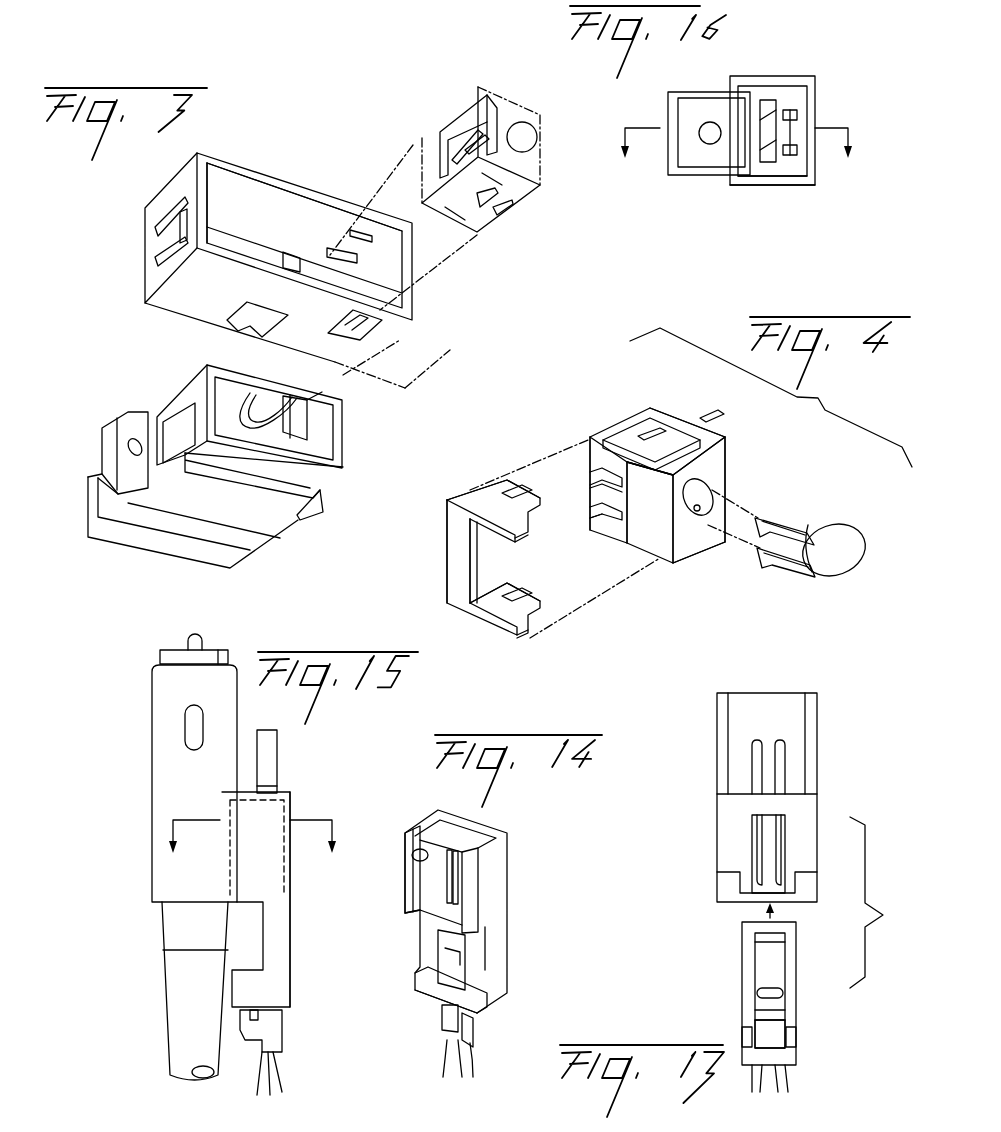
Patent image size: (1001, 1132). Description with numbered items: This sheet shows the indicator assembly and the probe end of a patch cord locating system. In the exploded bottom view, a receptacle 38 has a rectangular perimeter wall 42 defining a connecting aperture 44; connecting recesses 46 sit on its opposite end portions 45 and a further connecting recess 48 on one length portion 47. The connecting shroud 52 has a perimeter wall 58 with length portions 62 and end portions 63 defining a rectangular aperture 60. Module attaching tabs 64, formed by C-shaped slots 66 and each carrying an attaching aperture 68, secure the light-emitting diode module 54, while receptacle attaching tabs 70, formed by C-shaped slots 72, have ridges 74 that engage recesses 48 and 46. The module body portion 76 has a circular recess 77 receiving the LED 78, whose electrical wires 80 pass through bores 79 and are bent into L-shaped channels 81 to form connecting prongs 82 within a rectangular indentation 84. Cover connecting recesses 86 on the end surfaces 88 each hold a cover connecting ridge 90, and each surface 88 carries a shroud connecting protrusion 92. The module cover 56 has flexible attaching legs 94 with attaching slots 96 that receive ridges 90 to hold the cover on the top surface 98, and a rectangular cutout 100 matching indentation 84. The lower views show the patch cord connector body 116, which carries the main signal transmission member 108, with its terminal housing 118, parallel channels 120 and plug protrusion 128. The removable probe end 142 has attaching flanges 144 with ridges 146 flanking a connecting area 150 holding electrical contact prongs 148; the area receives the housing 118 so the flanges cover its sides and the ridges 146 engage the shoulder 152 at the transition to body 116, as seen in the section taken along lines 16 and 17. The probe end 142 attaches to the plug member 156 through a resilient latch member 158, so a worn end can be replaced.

In FIG. 15, the section line 16 is at (253, 847).
In FIG. 16, the section line 17 is at (737, 156).
In FIG. 3, the receptacle 38 is at (378, 405).
In FIG. 3, the perimeter wall 42 is at (345, 440).
In FIG. 3, the connecting aperture 44 is at (332, 408).
In FIG. 3, the end portions 45 is at (200, 382).
In FIG. 3, the connecting recesses 46 is at (143, 453).
In FIG. 3, the length portion 47 is at (322, 485).
In FIG. 3, the connecting recess 48 is at (248, 475).
In FIG. 3, the connecting shroud 52 is at (278, 148).
In FIG. 3, the light-emitting diode module 54 is at (513, 78).
In FIG. 4, the light-emitting diode module 54 is at (588, 418).
In FIG. 3, the module cover 56 is at (445, 85).
In FIG. 4, the module cover 56 is at (462, 480).
In FIG. 3, the perimeter wall 58 is at (231, 150).
In FIG. 3, the rectangular aperture 60 is at (215, 208).
In FIG. 3, the length portions 62 is at (300, 185).
In FIG. 3, the end portions 63 is at (180, 170).
In FIG. 3, the module attaching tabs 64 is at (358, 262).
In FIG. 3, the C-shaped slots 66 is at (366, 230).
In FIG. 3, the attaching aperture 68 is at (345, 318).
In FIG. 3, the receptacle attaching tab 70 is at (153, 225).
In FIG. 3, the C-shaped slots 72 is at (155, 258).
In FIG. 3, the ridge 74 is at (216, 230).
In FIG. 4, the body portion 76 is at (722, 457).
In FIG. 4, the circular recess 77 is at (712, 505).
In FIG. 3, the LED 78 is at (536, 124).
In FIG. 4, the LED 78 is at (850, 573).
In FIG. 4, the bores 79 is at (690, 508).
In FIG. 4, the electrical wires 80 is at (795, 535).
In FIG. 4, the L-shaped channels 81 is at (590, 455).
In FIG. 3, the connecting prongs 82 is at (472, 152).
In FIG. 4, the rectangular indentation 84 is at (648, 472).
In FIG. 4, the cover connecting recesses 86 is at (628, 428).
In FIG. 4, the end surfaces 88 is at (702, 432).
In FIG. 3, the cover connecting ridge 90 is at (484, 207).
In FIG. 4, the cover connecting ridge 90 is at (646, 428).
In FIG. 4, the shroud connecting protrusion 92 is at (700, 418).
In FIG. 4, the flexible attaching legs 94 is at (483, 470).
In FIG. 4, the attaching slot 96 is at (524, 490).
In FIG. 4, the top surface 98 is at (602, 497).
In FIG. 4, the rectangular cutout 100 is at (492, 532).
In FIG. 16, the main signal transmission member 108 is at (708, 140).
In FIG. 15, the main signal transmission member 108 is at (190, 636).
In FIG. 16, the connector body 116 is at (700, 92).
In FIG. 15, the connector body 116 is at (150, 727).
In FIG. 16, the terminal housing 118 is at (800, 88).
In FIG. 15, the terminal housing 118 is at (293, 895).
In FIG. 16, the parallel channels 120 is at (795, 150).
In FIG. 15, the plug protrusion 128 is at (280, 758).
In FIG. 15, the removable probe end 142 is at (298, 878).
In FIG. 14, the removable probe end 142 is at (520, 935).
In FIG. 13, the removable probe end 142 is at (830, 778).
In FIG. 16, the attaching flanges 144 is at (786, 76).
In FIG. 14, the attaching flanges 144 is at (412, 822).
In FIG. 13, the attaching flanges 144 is at (717, 730).
In FIG. 14, the ridge 146 is at (412, 856).
In FIG. 16, the electrical contact prongs 148 is at (742, 86).
In FIG. 14, the electrical contact prongs 148 is at (448, 893).
In FIG. 13, the electrical contact prongs 148 is at (782, 738).
In FIG. 14, the connecting area 150 is at (453, 830).
In FIG. 16, the shoulder 152 is at (745, 185).
In FIG. 15, the plug member 156 is at (268, 1058).
In FIG. 14, the plug member 156 is at (445, 1040).
In FIG. 13, the plug member 156 is at (742, 924).
In FIG. 15, the resilient latch member 158 is at (262, 1018).
In FIG. 14, the resilient latch member 158 is at (440, 1022).
In FIG. 13, the resilient latch member 158 is at (772, 1030).